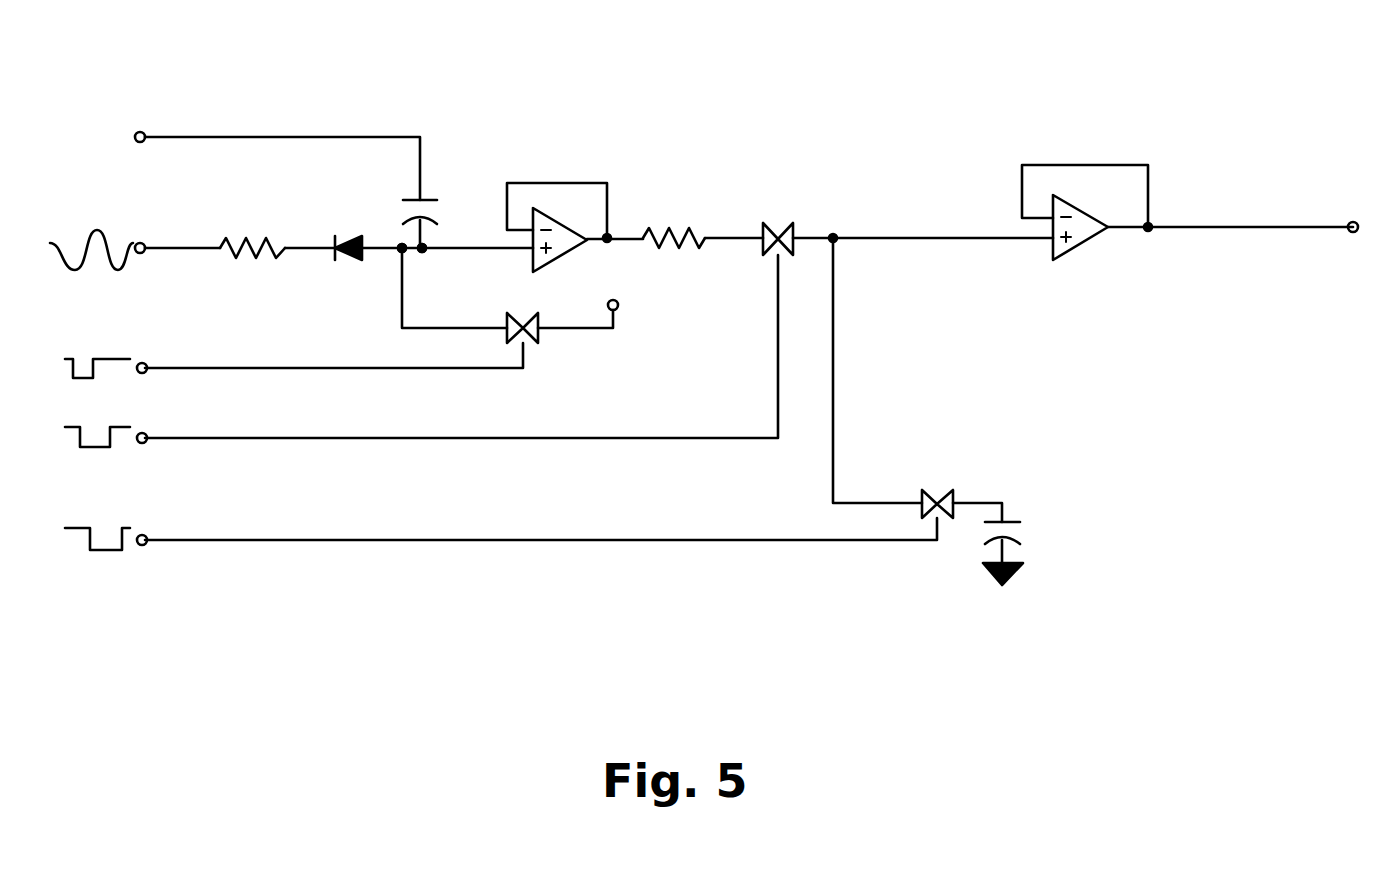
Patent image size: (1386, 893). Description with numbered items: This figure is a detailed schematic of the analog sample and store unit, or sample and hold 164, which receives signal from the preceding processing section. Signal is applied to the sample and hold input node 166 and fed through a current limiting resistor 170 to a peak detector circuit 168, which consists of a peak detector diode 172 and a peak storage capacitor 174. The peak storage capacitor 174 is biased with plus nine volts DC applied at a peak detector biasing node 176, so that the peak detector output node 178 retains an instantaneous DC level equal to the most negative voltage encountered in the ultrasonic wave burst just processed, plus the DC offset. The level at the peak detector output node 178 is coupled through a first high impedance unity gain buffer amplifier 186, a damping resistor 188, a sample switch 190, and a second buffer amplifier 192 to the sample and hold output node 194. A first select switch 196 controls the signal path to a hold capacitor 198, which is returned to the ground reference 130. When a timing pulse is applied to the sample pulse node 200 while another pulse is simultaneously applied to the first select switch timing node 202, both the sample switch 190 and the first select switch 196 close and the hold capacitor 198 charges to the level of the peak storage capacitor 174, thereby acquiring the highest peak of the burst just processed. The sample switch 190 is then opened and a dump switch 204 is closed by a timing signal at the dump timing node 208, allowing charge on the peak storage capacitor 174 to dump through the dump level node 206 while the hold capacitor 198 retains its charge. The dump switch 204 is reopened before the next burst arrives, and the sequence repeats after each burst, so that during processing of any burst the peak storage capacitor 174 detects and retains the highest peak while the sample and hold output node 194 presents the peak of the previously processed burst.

The analog sample and store unit 164 is at (172, 72).
The peak detector biasing node 176 is at (143, 132).
The sample and hold input node 166 is at (143, 243).
The current limiting resistor 170 is at (265, 219).
The peak detector diode 172 is at (352, 262).
The peak detector circuit 168 is at (390, 243).
The peak storage capacitor 174 is at (425, 197).
The peak detector output node 178 is at (424, 251).
The first high impedance unity gain buffer amplifier 186 is at (562, 262).
The dump switch 204 is at (540, 338).
The dump level node 206 is at (616, 310).
The dump timing node 208 is at (145, 363).
The sample pulse node 200 is at (145, 433).
The first select switch timing node 202 is at (145, 535).
The damping resistor 188 is at (672, 232).
The sample switch 190 is at (778, 222).
The second buffer amplifier 192 is at (1073, 200).
The sample and hold output node 194 is at (1353, 222).
The first select switch 196 is at (937, 488).
The hold capacitor 198 is at (1022, 524).
The ground reference 130 is at (1012, 582).